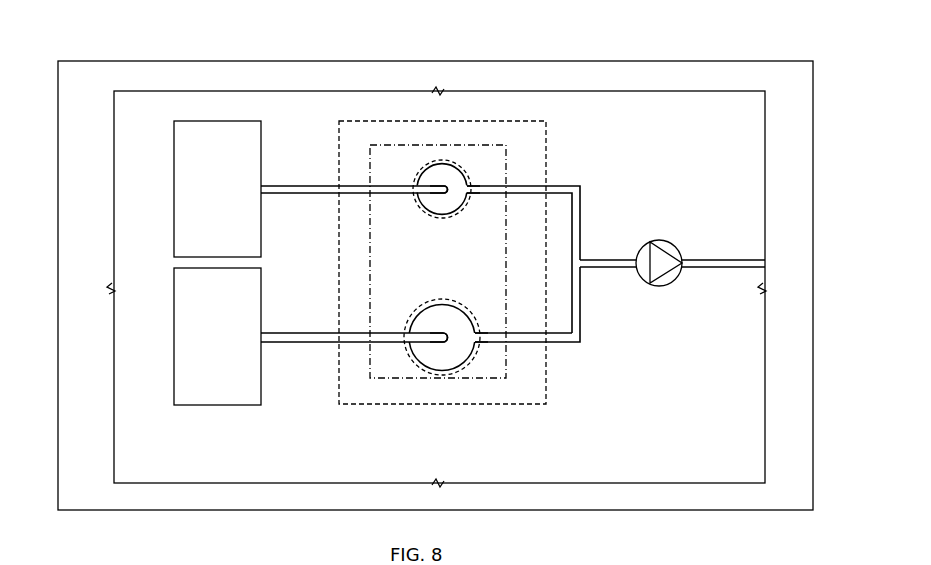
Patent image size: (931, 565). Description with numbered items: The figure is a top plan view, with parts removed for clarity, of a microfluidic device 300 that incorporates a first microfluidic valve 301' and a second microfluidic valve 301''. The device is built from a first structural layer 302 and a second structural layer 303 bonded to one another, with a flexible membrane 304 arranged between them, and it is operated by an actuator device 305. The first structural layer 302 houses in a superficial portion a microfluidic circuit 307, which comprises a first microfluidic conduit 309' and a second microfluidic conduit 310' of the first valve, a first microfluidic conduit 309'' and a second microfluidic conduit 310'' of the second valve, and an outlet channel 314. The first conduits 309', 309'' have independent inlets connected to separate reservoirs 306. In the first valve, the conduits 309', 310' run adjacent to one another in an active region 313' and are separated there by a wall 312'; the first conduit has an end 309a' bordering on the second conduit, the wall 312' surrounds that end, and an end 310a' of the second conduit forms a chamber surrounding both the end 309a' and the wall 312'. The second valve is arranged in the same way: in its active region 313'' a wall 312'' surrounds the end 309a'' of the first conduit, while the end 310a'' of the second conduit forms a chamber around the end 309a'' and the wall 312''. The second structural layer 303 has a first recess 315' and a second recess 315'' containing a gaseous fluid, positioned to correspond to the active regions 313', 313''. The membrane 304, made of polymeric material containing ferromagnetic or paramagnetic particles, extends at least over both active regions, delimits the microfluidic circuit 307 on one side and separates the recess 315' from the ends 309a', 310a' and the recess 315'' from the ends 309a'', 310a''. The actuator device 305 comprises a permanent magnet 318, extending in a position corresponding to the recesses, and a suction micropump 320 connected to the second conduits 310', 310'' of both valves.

The microfluidic device 300 is at (727, 45).
The first structural layer 302 is at (148, 466).
The second structural layer 303 is at (85, 68).
The flexible membrane 304 is at (403, 405).
The actuator device 305 is at (672, 287).
The reservoirs 306 is at (217, 263).
The microfluidic circuit 307 is at (333, 401).
The first microfluidic conduit 309' is at (354, 107).
The first microfluidic conduit 309'' is at (354, 390).
The end of first microfluidic conduit 309a' is at (385, 107).
The end of first microfluidic conduit 309a'' is at (379, 390).
The second microfluidic conduit 310' is at (558, 238).
The second microfluidic conduit 310'' is at (563, 333).
The end of second microfluidic conduit 310a' is at (546, 168).
The end of second microfluidic conduit 310a'' is at (543, 366).
The wall 312' is at (427, 206).
The wall 312'' is at (453, 319).
The active region 313' is at (452, 135).
The active region 313'' is at (439, 359).
The outlet channel 314 is at (725, 269).
The first recess 315' is at (457, 203).
The second recess 315'' is at (449, 375).
The permanent magnet 318 is at (369, 230).
The suction micropump 320 is at (676, 245).
The first microfluidic valve 301' is at (498, 200).
The second microfluidic valve 301'' is at (489, 363).